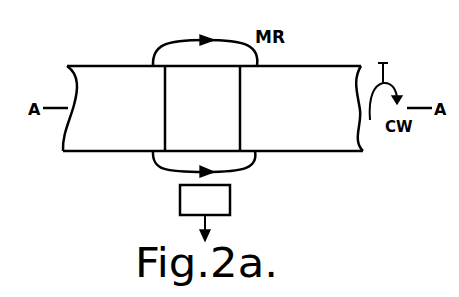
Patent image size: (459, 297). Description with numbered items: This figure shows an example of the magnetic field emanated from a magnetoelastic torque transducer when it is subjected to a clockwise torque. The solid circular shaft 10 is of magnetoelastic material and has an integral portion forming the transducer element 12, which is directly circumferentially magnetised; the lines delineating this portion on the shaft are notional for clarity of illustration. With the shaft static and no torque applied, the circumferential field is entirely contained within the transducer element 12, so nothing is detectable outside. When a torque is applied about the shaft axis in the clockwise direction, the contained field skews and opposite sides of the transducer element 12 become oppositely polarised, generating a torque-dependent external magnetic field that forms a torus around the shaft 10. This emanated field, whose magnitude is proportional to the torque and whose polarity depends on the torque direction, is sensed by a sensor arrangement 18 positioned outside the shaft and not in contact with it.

The shaft 10 is at (108, 77).
The transducer element 12 is at (237, 86).
The sensor arrangement 18 is at (225, 205).